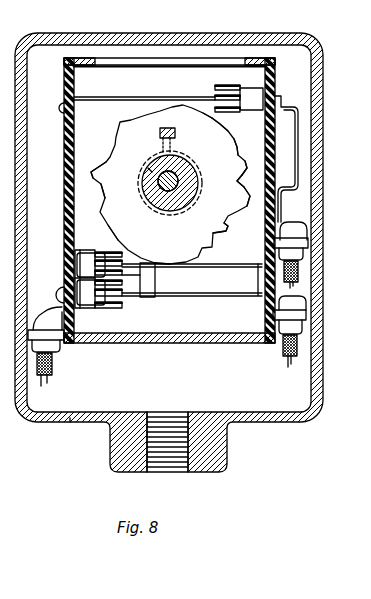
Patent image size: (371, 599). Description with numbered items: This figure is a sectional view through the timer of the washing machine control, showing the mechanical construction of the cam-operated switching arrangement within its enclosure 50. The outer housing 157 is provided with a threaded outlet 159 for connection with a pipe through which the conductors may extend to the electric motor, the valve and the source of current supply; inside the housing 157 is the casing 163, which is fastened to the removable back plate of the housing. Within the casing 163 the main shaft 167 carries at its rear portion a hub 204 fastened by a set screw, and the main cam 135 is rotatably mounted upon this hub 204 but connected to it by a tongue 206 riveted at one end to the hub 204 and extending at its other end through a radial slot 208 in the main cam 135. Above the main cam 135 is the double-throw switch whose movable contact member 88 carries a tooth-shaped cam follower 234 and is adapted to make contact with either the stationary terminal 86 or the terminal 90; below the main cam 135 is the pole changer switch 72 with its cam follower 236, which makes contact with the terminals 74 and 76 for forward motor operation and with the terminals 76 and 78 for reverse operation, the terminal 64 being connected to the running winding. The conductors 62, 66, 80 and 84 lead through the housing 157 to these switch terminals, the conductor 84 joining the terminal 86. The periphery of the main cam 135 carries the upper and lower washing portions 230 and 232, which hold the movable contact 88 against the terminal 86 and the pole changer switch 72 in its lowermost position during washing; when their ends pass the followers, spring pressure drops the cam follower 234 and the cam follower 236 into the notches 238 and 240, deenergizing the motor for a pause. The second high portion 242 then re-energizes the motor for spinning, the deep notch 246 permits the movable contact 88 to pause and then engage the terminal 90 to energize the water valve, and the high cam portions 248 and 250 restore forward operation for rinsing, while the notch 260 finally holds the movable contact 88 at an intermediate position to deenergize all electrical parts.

The switch assembly 50 is at (70, 422).
The housing 157 is at (318, 180).
The threaded outlet 159 is at (228, 452).
The casing 163 is at (163, 344).
The conductor 62 is at (288, 358).
The conductor 66 is at (292, 286).
The conductor 80 is at (45, 383).
The conductor 84 is at (292, 107).
The terminal 86 is at (232, 86).
The movable contact member 88 is at (220, 100).
The terminal 90 is at (236, 112).
The terminal 78 is at (102, 252).
The terminal 76 is at (122, 277).
The terminal 74 is at (98, 312).
The pole changer switch 72 is at (157, 293).
The terminal 64 is at (125, 297).
The cam follower 236 is at (186, 267).
The cam follower 234 is at (173, 106).
The main shaft 167 is at (170, 211).
The hub 204 is at (150, 170).
The tongue 206 is at (160, 133).
The radial slot 208 is at (210, 112).
The upper washing cam portion 230 is at (209, 133).
The lower washing cam portion 232 is at (118, 242).
The notch 238 is at (236, 150).
The notch 240 is at (101, 190).
The second high portion 242 is at (240, 170).
The deep notch 246 is at (237, 182).
The high cam portion 248 is at (95, 172).
The high cam portion 250 is at (240, 200).
The notch 260 is at (166, 262).
The main cam 135 is at (225, 226).